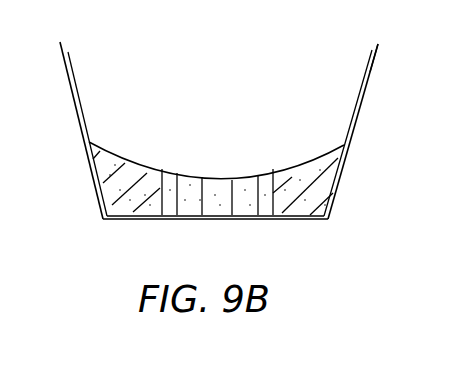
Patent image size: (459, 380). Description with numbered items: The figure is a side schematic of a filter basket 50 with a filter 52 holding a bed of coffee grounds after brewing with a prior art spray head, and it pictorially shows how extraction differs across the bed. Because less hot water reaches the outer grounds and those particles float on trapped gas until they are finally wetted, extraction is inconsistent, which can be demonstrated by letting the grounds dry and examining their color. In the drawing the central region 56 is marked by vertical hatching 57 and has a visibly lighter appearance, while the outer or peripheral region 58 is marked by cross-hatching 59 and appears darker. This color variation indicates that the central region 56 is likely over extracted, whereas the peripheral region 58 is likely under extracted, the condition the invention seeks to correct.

The filter basket 50 is at (357, 123).
The filter 52 is at (369, 72).
The central region 56 is at (275, 145).
The vertical hatching 57 is at (238, 203).
The peripheral region 58 is at (347, 81).
The cross-hatching 59 is at (320, 188).